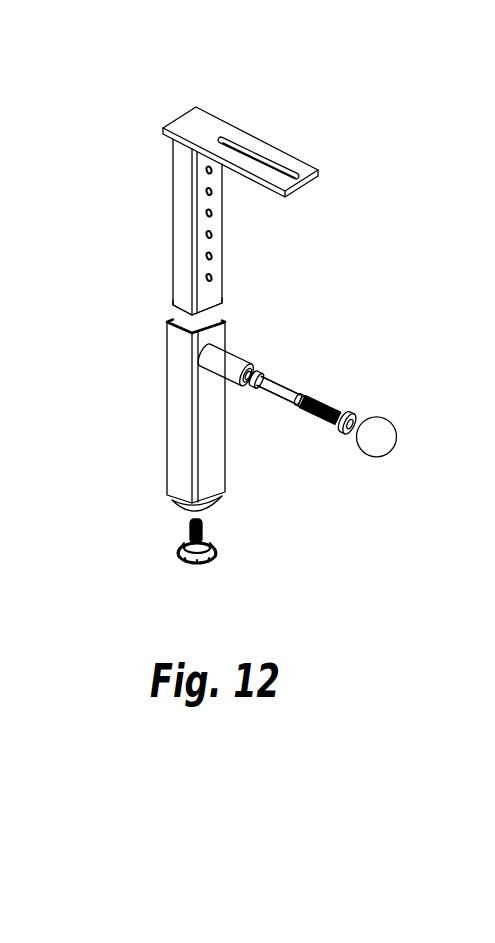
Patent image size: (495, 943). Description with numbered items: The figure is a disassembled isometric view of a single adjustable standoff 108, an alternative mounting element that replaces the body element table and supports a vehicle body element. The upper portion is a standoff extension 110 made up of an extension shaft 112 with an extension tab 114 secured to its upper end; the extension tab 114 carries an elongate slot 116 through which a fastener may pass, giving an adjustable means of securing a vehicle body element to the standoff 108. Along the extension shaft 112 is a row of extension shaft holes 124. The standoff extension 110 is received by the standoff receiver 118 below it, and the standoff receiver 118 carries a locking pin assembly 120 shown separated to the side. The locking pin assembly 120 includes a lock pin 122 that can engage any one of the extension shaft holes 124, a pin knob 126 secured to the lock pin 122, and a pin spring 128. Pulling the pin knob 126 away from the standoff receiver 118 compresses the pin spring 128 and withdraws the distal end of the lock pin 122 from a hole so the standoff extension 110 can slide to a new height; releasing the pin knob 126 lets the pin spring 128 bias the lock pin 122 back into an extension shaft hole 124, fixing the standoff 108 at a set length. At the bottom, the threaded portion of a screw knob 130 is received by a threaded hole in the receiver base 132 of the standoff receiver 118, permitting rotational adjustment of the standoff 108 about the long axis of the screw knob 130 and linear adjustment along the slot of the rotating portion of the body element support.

The standoff 108 is at (319, 98).
The standoff extension 110 is at (246, 273).
The extension shaft 112 is at (213, 300).
The extension tab 114 is at (206, 124).
The elongate slot 116 is at (235, 140).
The standoff receiver 118 is at (244, 496).
The locking pin assembly 120 is at (364, 334).
The lock pin 122 is at (290, 392).
The extension shaft holes 124 is at (215, 190).
The pin knob 126 is at (385, 453).
The pin spring 128 is at (316, 421).
The screw knob 130 is at (232, 571).
The receiver base 132 is at (172, 503).